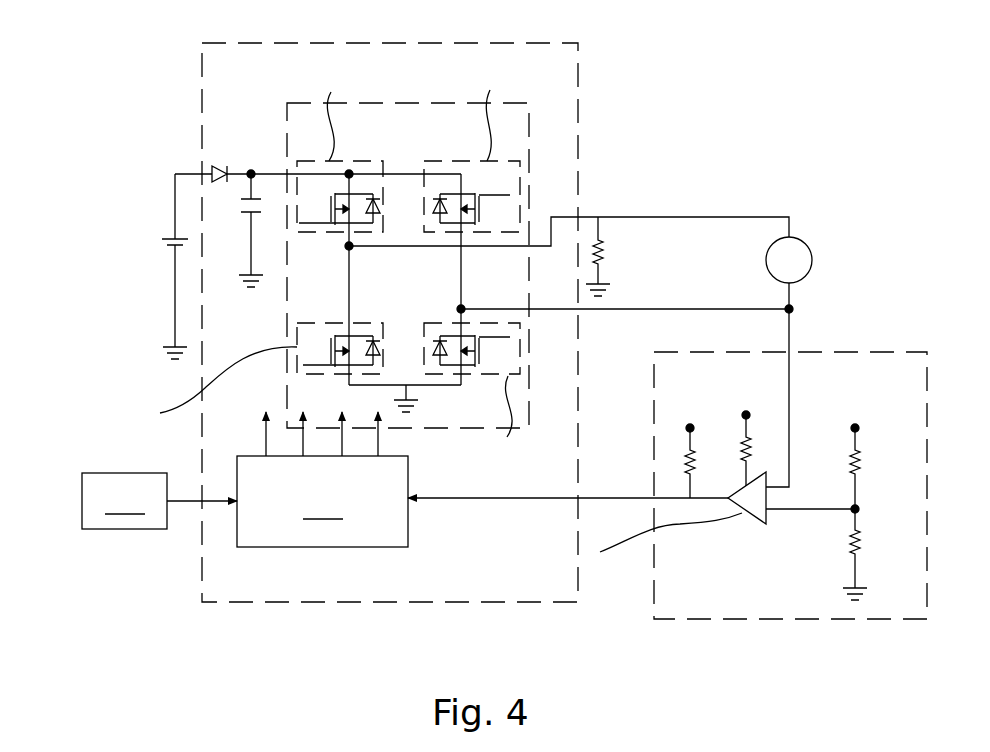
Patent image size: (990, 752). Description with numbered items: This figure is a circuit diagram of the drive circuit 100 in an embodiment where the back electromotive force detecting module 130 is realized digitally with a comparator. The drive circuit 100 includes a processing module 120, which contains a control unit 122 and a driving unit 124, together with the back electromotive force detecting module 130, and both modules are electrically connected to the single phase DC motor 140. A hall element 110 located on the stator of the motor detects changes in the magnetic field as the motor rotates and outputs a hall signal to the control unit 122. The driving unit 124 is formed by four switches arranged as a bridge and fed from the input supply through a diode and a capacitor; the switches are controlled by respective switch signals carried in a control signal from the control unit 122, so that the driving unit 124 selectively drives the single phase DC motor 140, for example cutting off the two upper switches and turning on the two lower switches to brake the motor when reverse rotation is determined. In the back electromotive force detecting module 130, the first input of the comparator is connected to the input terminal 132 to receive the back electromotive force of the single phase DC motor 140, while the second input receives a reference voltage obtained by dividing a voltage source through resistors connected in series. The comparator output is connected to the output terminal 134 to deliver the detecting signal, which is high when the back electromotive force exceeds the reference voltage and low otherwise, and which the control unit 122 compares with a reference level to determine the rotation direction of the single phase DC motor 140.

The drive circuit 100 is at (112, 623).
The hall element 110 is at (159, 524).
The processing module 120 is at (578, 60).
The control unit 122 is at (322, 501).
The driving unit 124 is at (529, 153).
The back electromotive force detecting module 130 is at (730, 605).
The input terminal 132 is at (790, 350).
The output terminal 134 is at (655, 498).
The single phase DC motor 140 is at (805, 244).